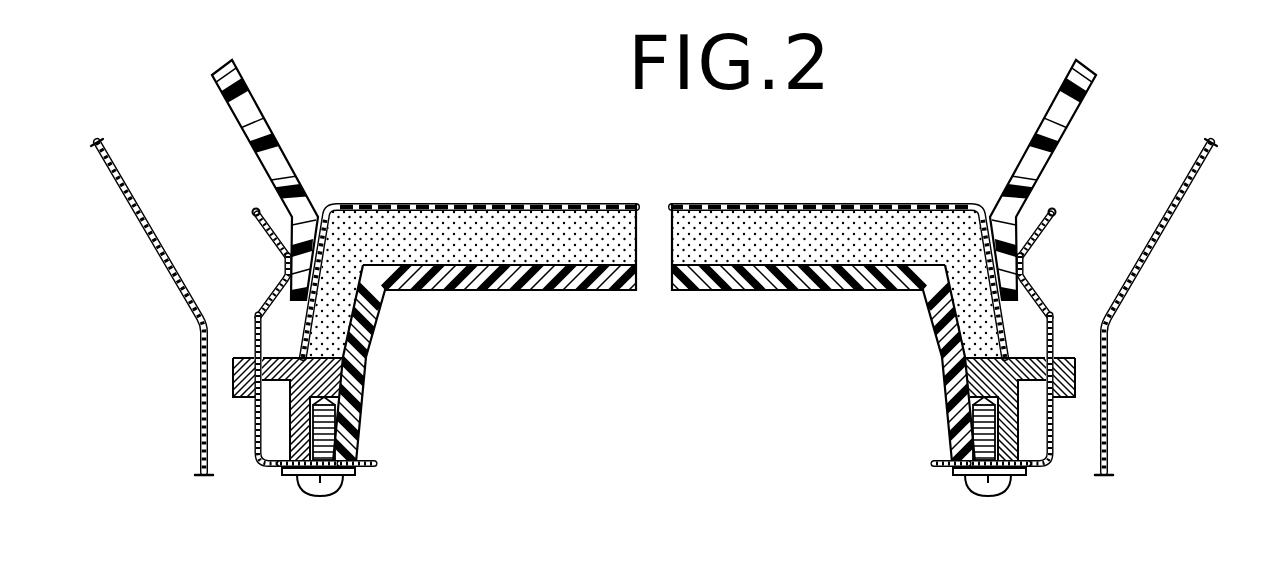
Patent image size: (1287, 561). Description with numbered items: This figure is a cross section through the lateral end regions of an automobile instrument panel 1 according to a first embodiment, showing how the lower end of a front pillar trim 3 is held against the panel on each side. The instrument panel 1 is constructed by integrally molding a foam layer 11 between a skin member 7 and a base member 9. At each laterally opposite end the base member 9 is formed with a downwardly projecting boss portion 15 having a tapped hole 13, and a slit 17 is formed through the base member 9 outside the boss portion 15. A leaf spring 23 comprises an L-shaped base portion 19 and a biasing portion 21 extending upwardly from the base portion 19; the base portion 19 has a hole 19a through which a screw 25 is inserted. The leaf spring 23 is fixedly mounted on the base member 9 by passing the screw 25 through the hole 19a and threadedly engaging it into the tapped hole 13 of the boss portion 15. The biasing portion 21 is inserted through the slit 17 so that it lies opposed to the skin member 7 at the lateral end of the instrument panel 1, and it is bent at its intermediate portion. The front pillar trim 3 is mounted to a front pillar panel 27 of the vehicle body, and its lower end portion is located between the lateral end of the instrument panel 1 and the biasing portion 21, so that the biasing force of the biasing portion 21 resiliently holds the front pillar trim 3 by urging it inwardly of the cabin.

The instrument panel 1 is at (757, 200).
The front pillar trim 3 is at (268, 133).
The skin member 7 is at (829, 206).
The base member 9 is at (702, 288).
The foam layer 11 is at (783, 240).
The tapped hole 13 is at (339, 393).
The boss portion 15 is at (355, 416).
The slit 17 is at (266, 362).
The base portion 19 is at (277, 457).
The hole 19a is at (342, 448).
The biasing portion 21 is at (252, 211).
The leaf spring 23 is at (274, 269).
The screw 25 is at (293, 487).
The front pillar panel 27 is at (142, 227).